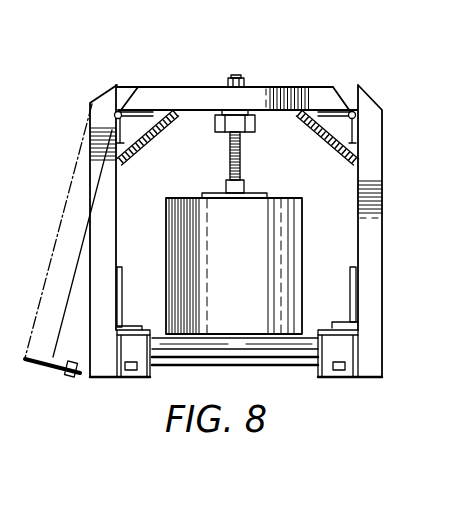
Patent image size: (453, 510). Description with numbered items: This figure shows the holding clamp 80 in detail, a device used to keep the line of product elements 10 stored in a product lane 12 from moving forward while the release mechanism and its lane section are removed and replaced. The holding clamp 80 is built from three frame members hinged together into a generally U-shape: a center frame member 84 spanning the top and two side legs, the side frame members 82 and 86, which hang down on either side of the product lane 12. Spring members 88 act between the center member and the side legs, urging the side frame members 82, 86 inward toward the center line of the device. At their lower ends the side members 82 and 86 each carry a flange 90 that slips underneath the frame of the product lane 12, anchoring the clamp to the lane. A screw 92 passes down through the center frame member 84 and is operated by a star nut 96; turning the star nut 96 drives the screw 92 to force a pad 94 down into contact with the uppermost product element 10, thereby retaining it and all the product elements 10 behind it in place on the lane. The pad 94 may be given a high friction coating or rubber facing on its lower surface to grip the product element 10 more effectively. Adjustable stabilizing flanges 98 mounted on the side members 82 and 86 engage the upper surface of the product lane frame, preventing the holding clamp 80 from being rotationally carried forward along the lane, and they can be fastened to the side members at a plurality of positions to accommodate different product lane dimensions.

The holding clamp 80 is at (400, 89).
The side frame member 82 is at (372, 209).
The center frame member 84 is at (304, 95).
The side frame member 86 is at (112, 229).
The spring members 88 is at (141, 138).
The flanges 90 is at (66, 380).
The screw 92 is at (240, 150).
The pad 94 is at (266, 196).
The star nut 96 is at (216, 127).
The adjustable stabilizing flanges 98 is at (143, 289).
The product element 10 is at (244, 244).
The product lane 12 is at (151, 366).